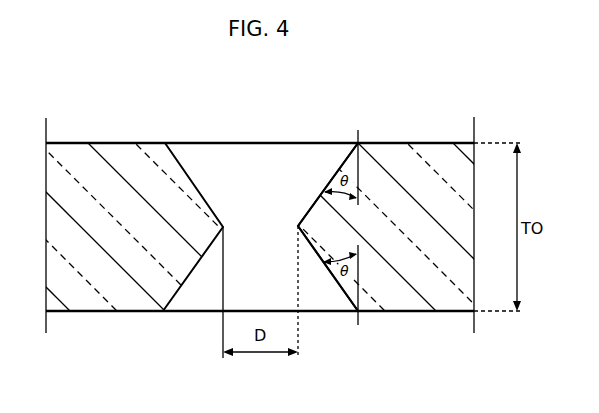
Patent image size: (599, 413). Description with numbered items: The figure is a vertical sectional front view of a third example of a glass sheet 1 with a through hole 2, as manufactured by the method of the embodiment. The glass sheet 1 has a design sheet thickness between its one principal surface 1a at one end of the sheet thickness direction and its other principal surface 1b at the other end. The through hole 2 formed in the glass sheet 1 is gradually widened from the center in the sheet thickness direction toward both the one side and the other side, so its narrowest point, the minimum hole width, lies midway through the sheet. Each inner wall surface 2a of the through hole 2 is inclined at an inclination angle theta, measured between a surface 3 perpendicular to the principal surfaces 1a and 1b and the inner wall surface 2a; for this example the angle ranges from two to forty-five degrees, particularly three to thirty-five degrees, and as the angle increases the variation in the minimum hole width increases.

The glass sheet 1 is at (107, 140).
The one principal surface 1a is at (428, 143).
The other principal surface 1b is at (427, 311).
The through hole 2 is at (242, 181).
The inner wall surface 2a is at (335, 175).
The surface perpendicular to the principal surfaces 3 is at (363, 161).